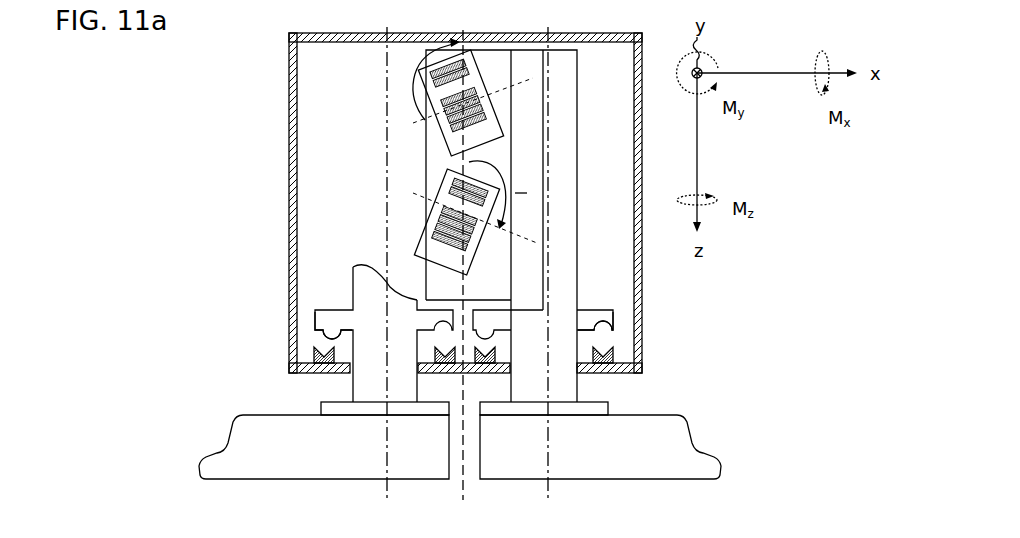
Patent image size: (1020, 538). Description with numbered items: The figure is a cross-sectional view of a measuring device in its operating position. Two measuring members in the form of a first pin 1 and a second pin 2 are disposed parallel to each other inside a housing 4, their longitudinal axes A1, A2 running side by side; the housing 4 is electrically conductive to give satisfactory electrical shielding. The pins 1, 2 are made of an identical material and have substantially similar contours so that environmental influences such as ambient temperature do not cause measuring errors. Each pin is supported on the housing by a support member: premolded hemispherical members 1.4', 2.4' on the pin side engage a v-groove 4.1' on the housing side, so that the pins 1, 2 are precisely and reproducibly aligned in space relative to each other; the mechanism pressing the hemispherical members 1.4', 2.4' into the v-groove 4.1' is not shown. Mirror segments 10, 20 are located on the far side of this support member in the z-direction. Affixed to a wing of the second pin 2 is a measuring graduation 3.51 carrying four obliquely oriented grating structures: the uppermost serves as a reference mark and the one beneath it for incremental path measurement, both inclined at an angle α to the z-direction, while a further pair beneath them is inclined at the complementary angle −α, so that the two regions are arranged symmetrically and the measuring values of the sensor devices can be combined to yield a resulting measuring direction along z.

The first pin 1 is at (381, 315).
The second pin 2 is at (563, 299).
The housing 4 is at (465, 203).
The mirror segment 10 is at (424, 456).
The mirror segment 20 is at (519, 456).
The hemispherical member 1.4' is at (288, 330).
The hemispherical member 2.4' is at (641, 319).
The v-groove 4.1' is at (465, 364).
The measuring graduation 3.51 is at (447, 162).
The longitudinal axis A1 is at (387, 27).
The longitudinal axis A2 is at (548, 27).